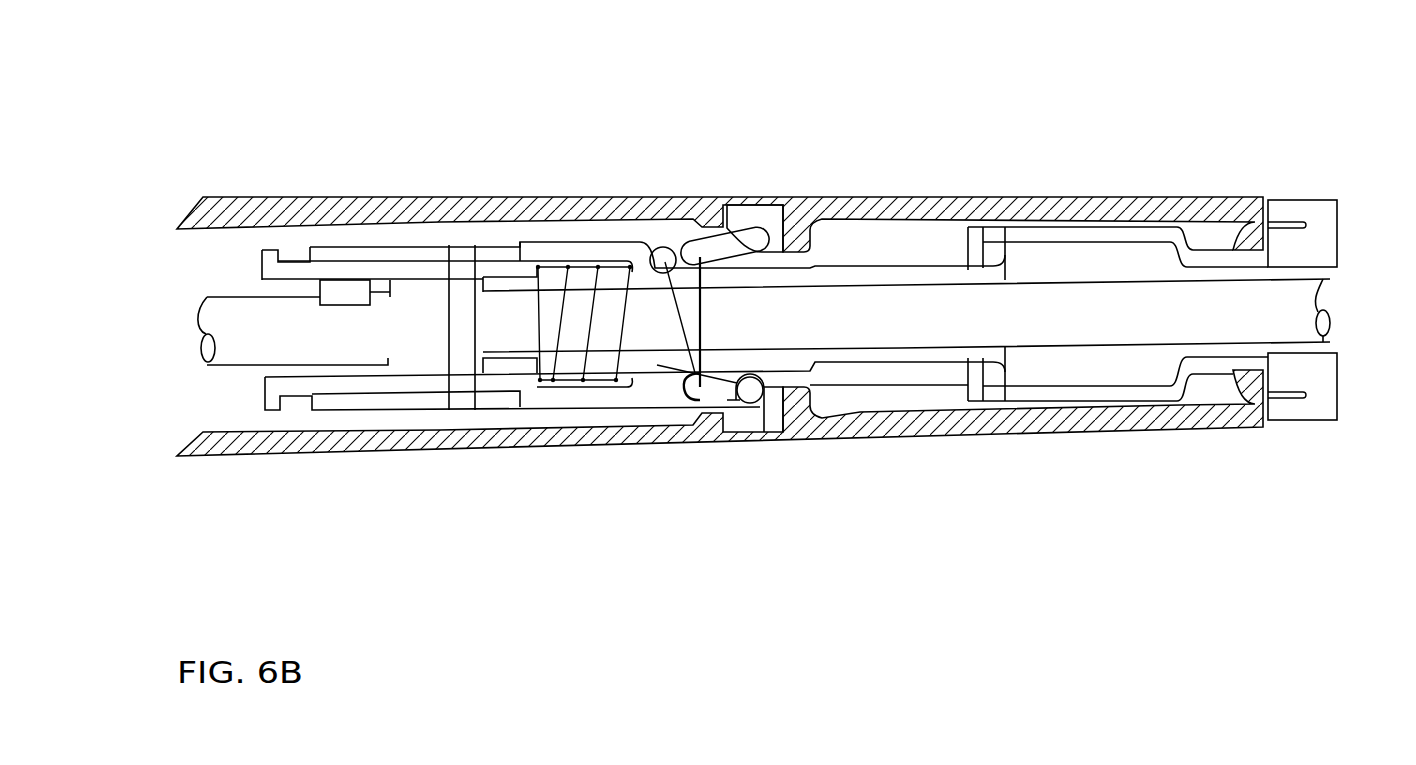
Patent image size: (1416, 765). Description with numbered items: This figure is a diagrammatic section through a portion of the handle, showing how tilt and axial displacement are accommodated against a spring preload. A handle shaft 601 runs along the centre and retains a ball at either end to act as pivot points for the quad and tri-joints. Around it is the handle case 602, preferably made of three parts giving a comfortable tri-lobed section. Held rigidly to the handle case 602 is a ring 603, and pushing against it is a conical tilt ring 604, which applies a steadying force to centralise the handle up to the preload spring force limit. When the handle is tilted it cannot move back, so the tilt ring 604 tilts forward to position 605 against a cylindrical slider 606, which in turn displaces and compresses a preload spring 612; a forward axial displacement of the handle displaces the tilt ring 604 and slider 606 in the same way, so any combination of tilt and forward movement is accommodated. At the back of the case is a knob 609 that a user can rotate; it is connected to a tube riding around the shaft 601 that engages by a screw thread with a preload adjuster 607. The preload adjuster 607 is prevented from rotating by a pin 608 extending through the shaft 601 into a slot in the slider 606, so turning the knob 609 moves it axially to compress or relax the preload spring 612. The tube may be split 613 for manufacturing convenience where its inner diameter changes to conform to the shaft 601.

The handle shaft 601 is at (223, 335).
The handle case 602 is at (805, 437).
The ring 603 is at (773, 222).
The conical tilt ring 604 is at (725, 250).
The tilted position of the tilt ring 605 is at (652, 255).
The cylindrical slider 606 is at (417, 252).
The preload adjuster 607 is at (278, 268).
The pin 608 is at (457, 407).
The knob 609 is at (1313, 213).
The preload spring 612 is at (567, 267).
The split in the tube 613 is at (1008, 248).